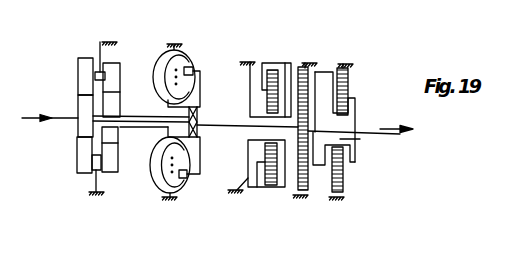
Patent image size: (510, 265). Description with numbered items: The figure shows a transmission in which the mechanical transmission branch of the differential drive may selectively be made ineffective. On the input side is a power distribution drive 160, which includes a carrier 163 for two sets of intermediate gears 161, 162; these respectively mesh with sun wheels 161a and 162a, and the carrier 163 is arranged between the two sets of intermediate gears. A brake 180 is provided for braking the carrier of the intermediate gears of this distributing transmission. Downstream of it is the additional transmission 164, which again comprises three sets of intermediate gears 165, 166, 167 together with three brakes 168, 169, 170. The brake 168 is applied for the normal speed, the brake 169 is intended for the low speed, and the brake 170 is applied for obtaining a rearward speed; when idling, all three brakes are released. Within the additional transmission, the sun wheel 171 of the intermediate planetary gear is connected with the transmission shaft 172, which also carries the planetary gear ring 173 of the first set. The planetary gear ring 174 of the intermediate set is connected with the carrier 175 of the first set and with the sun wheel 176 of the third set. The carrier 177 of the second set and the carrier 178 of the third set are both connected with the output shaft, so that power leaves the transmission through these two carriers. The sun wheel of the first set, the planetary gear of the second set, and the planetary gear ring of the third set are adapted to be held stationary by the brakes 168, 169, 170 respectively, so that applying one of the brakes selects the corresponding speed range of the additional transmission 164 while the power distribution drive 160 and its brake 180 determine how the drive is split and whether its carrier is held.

The power distribution drive 160 is at (119, 204).
The intermediate gears 161 is at (78, 160).
The sun wheel 161a is at (80, 115).
The intermediate gears 162 is at (111, 163).
The sun wheel 162a is at (110, 108).
The carrier 163 is at (96, 180).
The additional transmission 164 is at (350, 215).
The intermediate gears 165 is at (272, 180).
The intermediate gears 166 is at (300, 188).
The intermediate gears 167 is at (341, 190).
The brake 168 is at (243, 60).
The brake 169 is at (309, 62).
The brake 170 is at (353, 63).
The sun wheel 171 is at (262, 116).
The transmission shaft 172 is at (244, 128).
The planetary gear ring 173 is at (275, 70).
The planetary gear ring 174 is at (318, 68).
The carrier 175 is at (262, 82).
The sun wheel 176 is at (348, 110).
The carrier 177 is at (355, 140).
The carrier 178 is at (355, 163).
The brake 180 is at (115, 41).